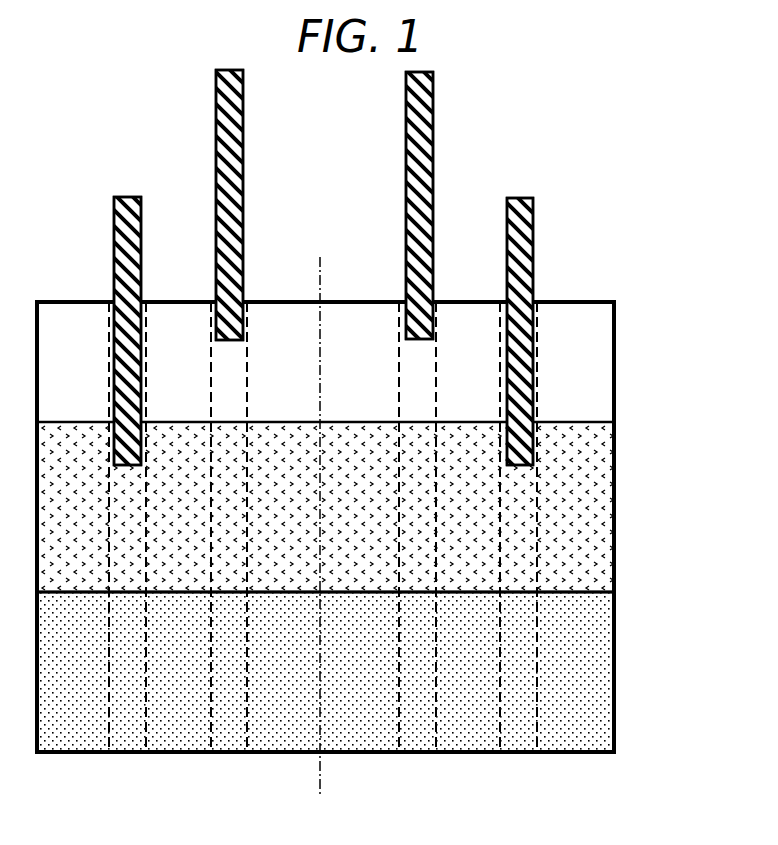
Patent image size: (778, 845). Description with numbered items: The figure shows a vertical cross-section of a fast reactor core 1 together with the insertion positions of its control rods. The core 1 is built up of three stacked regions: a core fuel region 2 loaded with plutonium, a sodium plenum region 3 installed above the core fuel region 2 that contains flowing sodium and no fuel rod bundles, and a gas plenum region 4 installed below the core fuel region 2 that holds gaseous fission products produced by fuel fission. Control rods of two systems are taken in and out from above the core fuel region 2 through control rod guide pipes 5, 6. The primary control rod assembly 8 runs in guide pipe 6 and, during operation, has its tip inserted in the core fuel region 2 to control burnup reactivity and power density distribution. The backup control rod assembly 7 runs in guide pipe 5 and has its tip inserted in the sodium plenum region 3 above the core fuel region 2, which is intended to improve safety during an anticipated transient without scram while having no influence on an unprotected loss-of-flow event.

The core 1 is at (320, 237).
The core fuel region 2 is at (580, 525).
The sodium plenum region 3 is at (580, 355).
The gas plenum region 4 is at (580, 680).
The control rod guide pipe 5 is at (437, 562).
The control rod guide pipe 6 is at (537, 488).
The backup control rod assembly 7 is at (422, 108).
The primary control rod assembly 8 is at (525, 222).